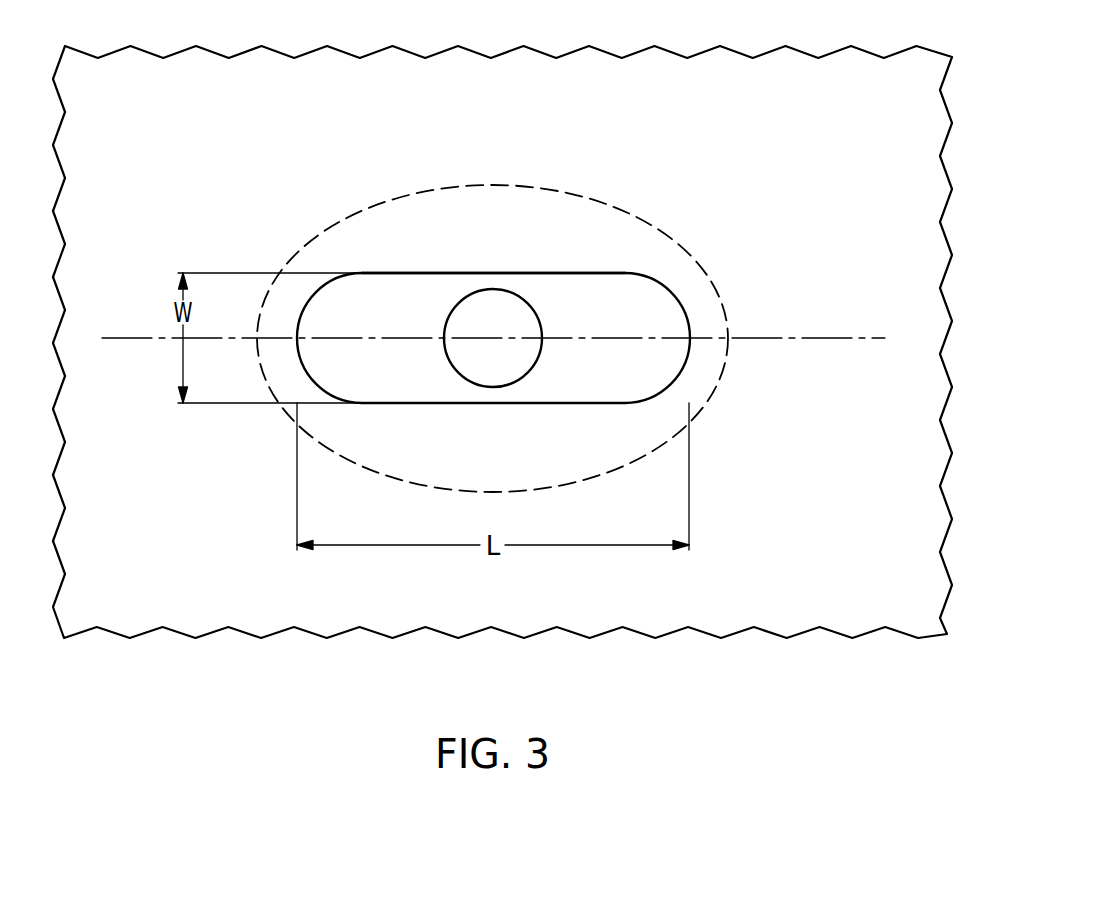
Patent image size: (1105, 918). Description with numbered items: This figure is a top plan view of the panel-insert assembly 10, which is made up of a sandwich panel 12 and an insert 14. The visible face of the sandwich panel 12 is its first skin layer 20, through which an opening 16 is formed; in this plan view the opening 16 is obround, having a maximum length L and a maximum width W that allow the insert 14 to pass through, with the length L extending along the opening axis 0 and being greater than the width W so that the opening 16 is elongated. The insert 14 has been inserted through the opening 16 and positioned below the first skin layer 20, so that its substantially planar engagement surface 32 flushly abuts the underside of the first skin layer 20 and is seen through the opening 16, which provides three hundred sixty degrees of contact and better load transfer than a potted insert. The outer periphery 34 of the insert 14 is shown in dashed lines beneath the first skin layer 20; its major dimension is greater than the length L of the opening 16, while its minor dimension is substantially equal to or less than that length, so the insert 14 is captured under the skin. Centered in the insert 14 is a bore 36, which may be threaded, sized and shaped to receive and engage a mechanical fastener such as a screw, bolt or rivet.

The panel-insert assembly 10 is at (998, 135).
The sandwich panel 12 is at (947, 234).
The insert 14 is at (664, 303).
The opening 16 is at (430, 273).
The first skin layer 20 is at (800, 565).
The engagement surface 32 is at (388, 320).
The outer periphery 34 is at (624, 212).
The bore 36 is at (525, 300).
The opening axis 0 is at (858, 340).